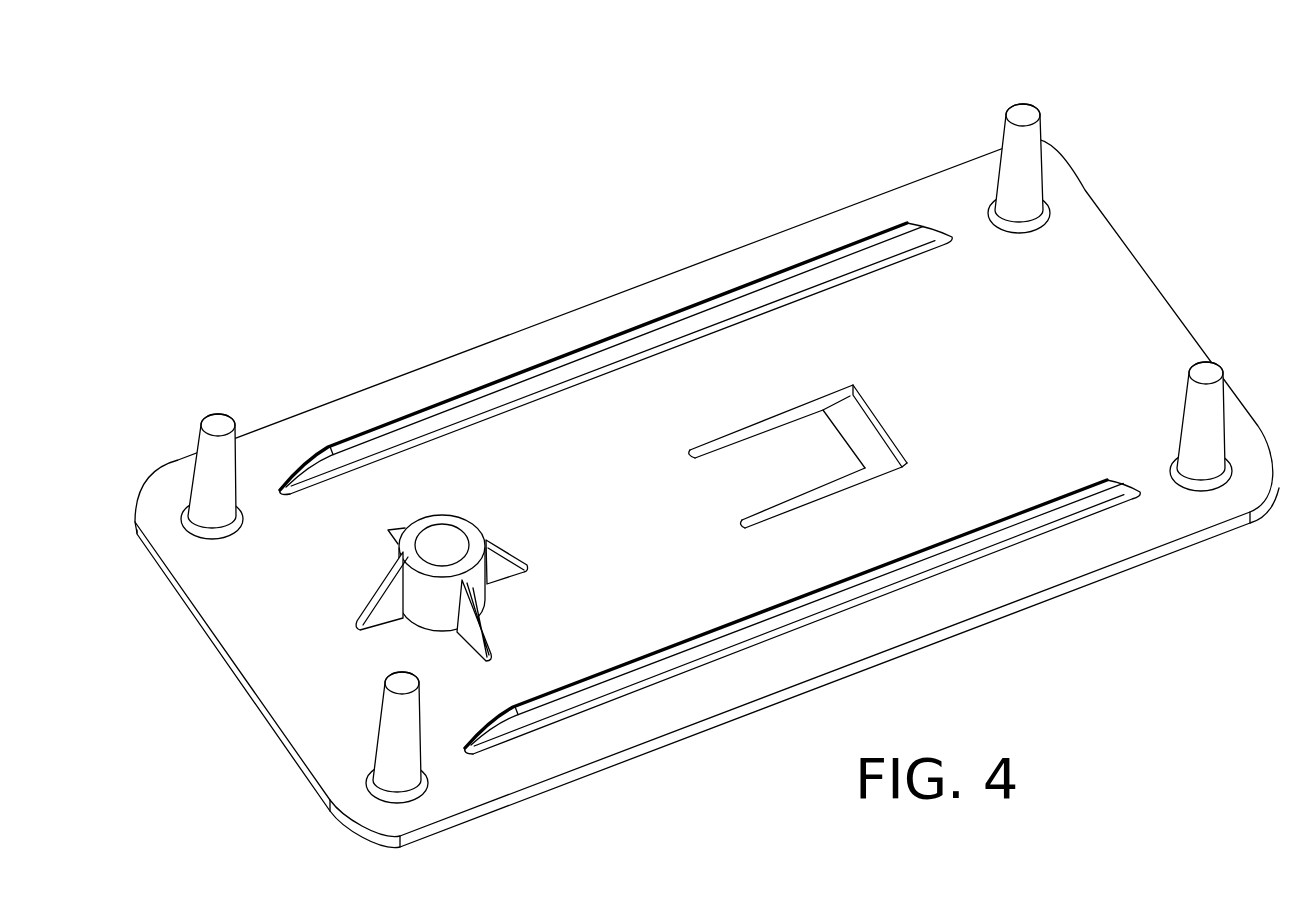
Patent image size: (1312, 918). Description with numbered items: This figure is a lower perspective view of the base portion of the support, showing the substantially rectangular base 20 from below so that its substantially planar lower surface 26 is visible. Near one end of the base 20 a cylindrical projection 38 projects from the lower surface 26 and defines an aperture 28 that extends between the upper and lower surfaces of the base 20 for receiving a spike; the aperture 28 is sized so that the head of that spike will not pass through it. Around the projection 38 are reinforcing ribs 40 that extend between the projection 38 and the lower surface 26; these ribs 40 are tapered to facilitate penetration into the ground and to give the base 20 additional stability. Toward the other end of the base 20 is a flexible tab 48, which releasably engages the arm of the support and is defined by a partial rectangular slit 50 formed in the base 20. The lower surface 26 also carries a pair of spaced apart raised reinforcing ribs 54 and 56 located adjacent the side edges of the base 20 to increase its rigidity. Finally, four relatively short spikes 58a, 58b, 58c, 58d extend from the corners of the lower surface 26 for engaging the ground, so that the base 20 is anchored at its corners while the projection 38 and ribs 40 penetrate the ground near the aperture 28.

The base 20 is at (717, 450).
The lower surface 26 is at (651, 527).
The aperture 28 is at (442, 540).
The cylindrical projection 38 is at (468, 549).
The reinforcing ribs 40 is at (397, 522).
The flexible tab 48 is at (813, 455).
The partial rectangular slit 50 is at (800, 410).
The raised reinforcing rib 54 is at (612, 354).
The raised reinforcing rib 56 is at (745, 612).
The short spike 58a is at (1030, 110).
The short spike 58b is at (221, 420).
The short spike 58c is at (392, 714).
The short spike 58d is at (1210, 378).